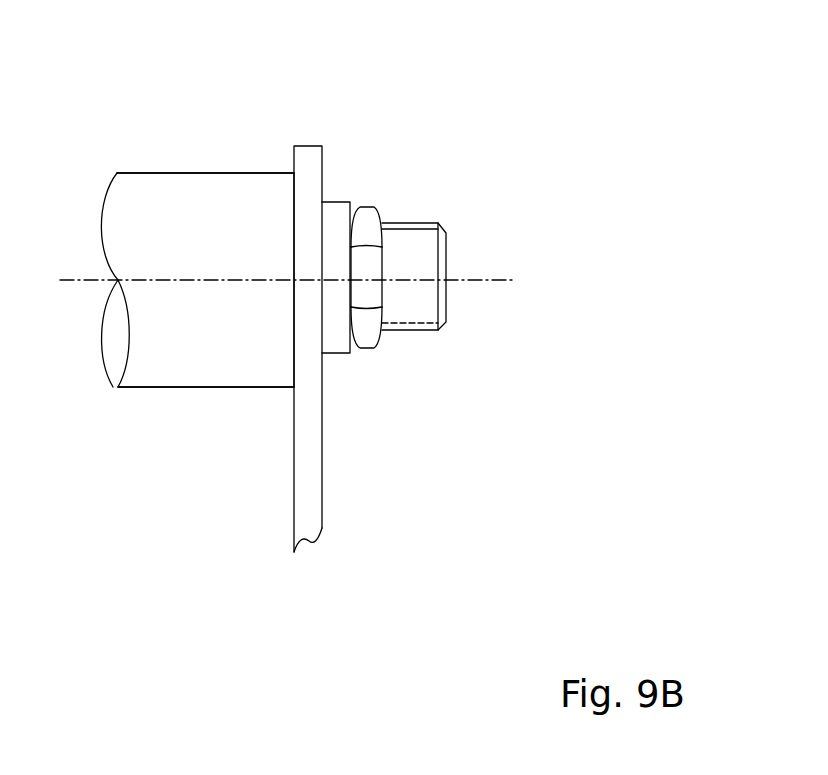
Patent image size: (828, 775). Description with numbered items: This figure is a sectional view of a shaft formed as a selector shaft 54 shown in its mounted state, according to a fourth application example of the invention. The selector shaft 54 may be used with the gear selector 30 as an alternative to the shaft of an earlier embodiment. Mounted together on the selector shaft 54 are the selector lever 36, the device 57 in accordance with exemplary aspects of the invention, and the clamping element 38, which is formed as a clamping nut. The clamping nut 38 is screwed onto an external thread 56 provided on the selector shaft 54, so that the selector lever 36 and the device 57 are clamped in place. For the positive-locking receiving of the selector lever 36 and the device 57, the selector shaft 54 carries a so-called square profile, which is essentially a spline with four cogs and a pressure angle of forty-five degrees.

The gear selector 30 is at (227, 490).
The selector shaft 54 is at (167, 353).
The selector lever 36 is at (310, 463).
The device 57 is at (335, 358).
The clamping element 38 is at (370, 347).
The thread 56 is at (415, 223).